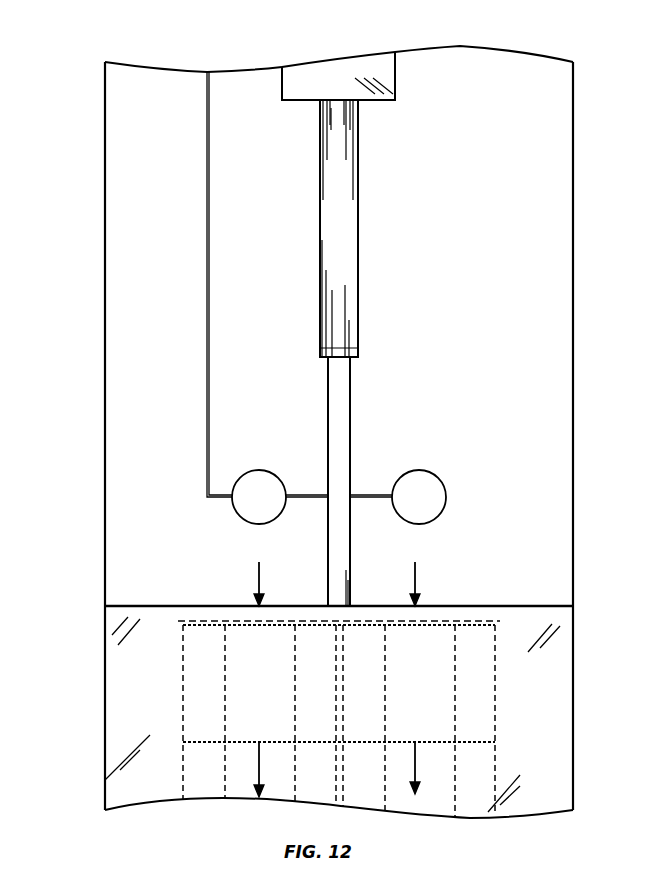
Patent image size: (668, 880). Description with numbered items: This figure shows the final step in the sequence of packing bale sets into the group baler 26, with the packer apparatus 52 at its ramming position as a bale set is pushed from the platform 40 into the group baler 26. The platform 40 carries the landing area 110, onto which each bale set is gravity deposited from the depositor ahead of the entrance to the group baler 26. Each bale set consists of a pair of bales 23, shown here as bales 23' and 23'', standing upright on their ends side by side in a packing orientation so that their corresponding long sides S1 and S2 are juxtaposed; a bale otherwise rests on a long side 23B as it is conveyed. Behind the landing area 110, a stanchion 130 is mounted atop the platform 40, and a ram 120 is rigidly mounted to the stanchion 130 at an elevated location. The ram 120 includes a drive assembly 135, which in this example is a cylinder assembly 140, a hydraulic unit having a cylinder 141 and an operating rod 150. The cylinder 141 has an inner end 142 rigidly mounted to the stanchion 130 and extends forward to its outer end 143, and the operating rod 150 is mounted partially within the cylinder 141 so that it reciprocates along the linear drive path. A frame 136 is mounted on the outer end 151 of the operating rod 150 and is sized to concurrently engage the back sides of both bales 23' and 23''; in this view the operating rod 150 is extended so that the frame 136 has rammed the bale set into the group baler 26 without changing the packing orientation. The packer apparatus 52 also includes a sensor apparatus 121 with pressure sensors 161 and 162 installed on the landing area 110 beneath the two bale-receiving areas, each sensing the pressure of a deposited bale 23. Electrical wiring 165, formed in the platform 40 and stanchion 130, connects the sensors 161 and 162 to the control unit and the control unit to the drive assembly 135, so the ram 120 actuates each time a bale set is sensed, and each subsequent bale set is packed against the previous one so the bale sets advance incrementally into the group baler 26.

The platform 40 is at (573, 275).
The stanchion 130 is at (324, 72).
The cylinder assembly 140 is at (358, 192).
The cylinder 141 is at (340, 175).
The inner end 142 is at (348, 113).
The outer end 143 is at (320, 352).
The drive assembly 135 is at (358, 248).
The packer apparatus 52 is at (414, 269).
The operating rod 150 is at (340, 381).
The electrical wiring 165 is at (205, 148).
The sensor 162 is at (258, 470).
The sensor 161 is at (420, 470).
The sensor apparatus 121 is at (447, 497).
The landing area 110 is at (475, 570).
The ram 120 is at (183, 621).
The frame 136 is at (190, 620).
The long side 23B is at (215, 622).
The bale 23 is at (331, 721).
The group baler 26 is at (573, 690).
The bale 23'' is at (113, 755).
The bale 23' is at (598, 821).
The outer end 151 is at (330, 620).
The long side S1 is at (335, 690).
The long side S2 is at (334, 720).